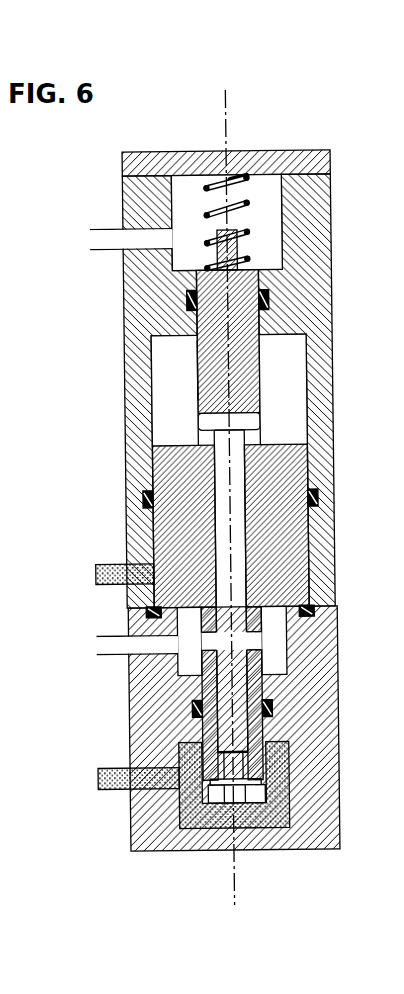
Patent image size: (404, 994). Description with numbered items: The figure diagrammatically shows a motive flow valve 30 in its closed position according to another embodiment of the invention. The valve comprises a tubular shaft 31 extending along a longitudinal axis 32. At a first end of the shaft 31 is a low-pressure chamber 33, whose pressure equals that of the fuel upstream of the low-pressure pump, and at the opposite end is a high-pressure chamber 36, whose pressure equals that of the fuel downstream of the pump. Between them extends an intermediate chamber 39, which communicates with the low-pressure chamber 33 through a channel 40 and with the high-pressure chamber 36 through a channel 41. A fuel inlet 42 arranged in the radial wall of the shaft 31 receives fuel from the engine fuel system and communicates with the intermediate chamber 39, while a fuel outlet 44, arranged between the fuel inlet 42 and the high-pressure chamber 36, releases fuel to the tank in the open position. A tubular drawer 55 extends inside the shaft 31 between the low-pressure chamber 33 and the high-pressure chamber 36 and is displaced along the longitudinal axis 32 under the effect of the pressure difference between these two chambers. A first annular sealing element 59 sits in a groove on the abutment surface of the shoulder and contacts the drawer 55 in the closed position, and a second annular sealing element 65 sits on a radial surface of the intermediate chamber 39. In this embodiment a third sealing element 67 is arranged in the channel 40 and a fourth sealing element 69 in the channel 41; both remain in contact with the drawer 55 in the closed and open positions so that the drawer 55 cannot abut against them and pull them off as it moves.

The motive flow valve 30 is at (364, 142).
The tubular shaft 31 is at (336, 438).
The longitudinal axis 32 is at (233, 104).
The low-pressure chamber 33 is at (271, 217).
The high-pressure chamber 36 is at (277, 808).
The intermediate chamber 39 is at (295, 372).
The channel 40 is at (261, 320).
The channel 41 is at (264, 725).
The fuel inlet 42 is at (142, 571).
The fuel outlet 44 is at (153, 645).
The tubular drawer 55 is at (198, 366).
The first annular sealing element 59 is at (314, 610).
The second annular sealing element 65 is at (322, 500).
The third sealing element 67 is at (190, 300).
The fourth sealing element 69 is at (275, 710).